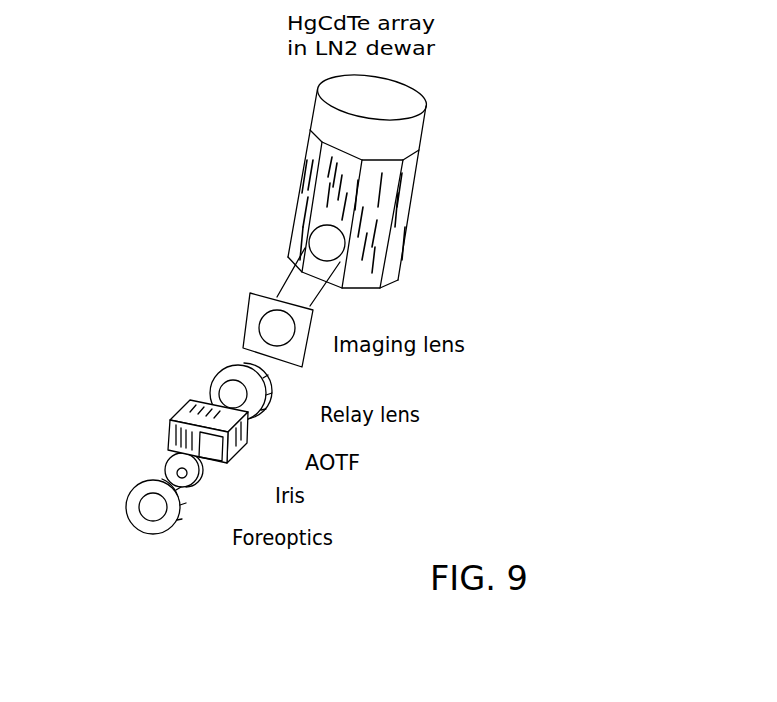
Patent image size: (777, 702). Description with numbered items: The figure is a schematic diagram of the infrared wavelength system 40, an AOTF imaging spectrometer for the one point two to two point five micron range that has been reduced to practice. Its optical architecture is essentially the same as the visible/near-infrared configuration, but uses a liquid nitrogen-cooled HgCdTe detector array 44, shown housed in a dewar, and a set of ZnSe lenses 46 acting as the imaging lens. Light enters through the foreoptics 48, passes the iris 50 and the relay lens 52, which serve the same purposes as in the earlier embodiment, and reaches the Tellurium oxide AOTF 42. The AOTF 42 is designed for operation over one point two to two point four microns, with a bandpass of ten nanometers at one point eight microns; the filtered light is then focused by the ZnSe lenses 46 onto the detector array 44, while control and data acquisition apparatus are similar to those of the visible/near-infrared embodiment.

The infrared wavelength system 40 is at (185, 325).
The Tellurium oxide AOTF 42 is at (177, 412).
The HgCdTe detector array 44 is at (303, 172).
The ZnSe lenses 46 is at (260, 292).
The foreoptics 48 is at (131, 525).
The iris 50 is at (170, 465).
The relay lens 52 is at (228, 375).